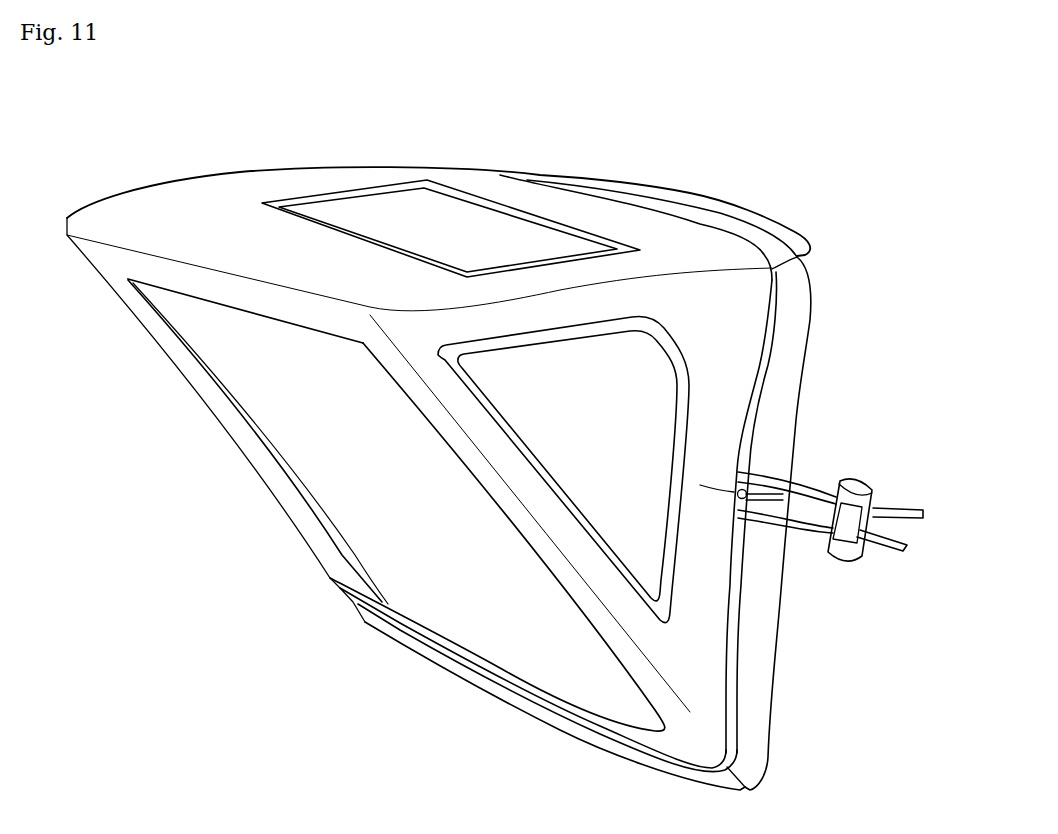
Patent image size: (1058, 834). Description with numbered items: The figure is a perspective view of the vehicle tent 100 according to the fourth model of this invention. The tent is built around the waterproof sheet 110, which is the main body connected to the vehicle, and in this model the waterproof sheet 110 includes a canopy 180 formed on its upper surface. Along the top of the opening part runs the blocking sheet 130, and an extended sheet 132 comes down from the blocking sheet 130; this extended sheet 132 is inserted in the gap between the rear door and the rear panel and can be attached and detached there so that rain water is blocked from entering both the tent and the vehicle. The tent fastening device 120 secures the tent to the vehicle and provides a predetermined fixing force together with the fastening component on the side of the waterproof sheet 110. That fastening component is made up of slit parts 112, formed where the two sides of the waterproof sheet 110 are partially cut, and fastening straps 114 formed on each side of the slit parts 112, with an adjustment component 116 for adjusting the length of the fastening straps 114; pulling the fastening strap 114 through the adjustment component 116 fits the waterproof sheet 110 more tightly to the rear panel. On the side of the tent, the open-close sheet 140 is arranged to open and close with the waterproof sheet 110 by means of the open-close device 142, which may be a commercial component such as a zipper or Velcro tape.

The vehicle tent 100 is at (776, 200).
The waterproof sheet 110 is at (296, 185).
The slit parts 112 is at (715, 493).
The fastening straps 114 is at (898, 507).
The adjustment component 116 is at (858, 480).
The tent fastening device 120 is at (773, 348).
The blocking sheet 130 is at (763, 657).
The extended sheet 132 is at (805, 242).
The open-close sheet 140 is at (285, 435).
The open-close device 142 is at (212, 380).
The canopy 180 is at (450, 222).